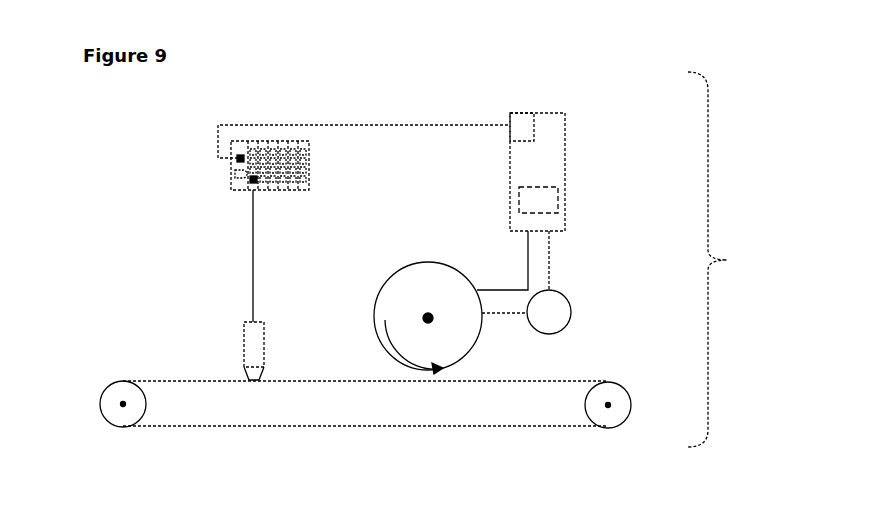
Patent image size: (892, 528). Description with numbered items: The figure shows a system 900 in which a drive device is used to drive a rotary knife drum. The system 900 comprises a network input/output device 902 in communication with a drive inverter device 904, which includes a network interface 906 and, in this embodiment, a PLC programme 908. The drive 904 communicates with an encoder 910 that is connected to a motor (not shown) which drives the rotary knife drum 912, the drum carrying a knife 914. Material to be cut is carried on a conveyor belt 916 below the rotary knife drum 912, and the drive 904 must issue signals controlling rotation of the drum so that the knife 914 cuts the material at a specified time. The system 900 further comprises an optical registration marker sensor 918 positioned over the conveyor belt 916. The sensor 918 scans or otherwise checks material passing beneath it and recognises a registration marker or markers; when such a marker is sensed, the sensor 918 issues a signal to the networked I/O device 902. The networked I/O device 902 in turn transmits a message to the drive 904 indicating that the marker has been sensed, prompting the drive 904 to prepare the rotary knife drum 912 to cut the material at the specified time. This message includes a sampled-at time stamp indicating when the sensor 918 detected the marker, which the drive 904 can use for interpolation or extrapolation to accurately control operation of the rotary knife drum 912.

The system 900 is at (723, 259).
The network input/output (I/O) device 902 is at (364, 157).
The drive inverter device 904 is at (522, 113).
The network interface 906 is at (529, 128).
The PLC programme 908 is at (545, 200).
The encoder 910 is at (570, 305).
The rotary knife drum 912 is at (387, 283).
The knife 914 is at (372, 323).
The conveyor belt 916 is at (365, 404).
The optical registration marker sensor 918 is at (244, 343).